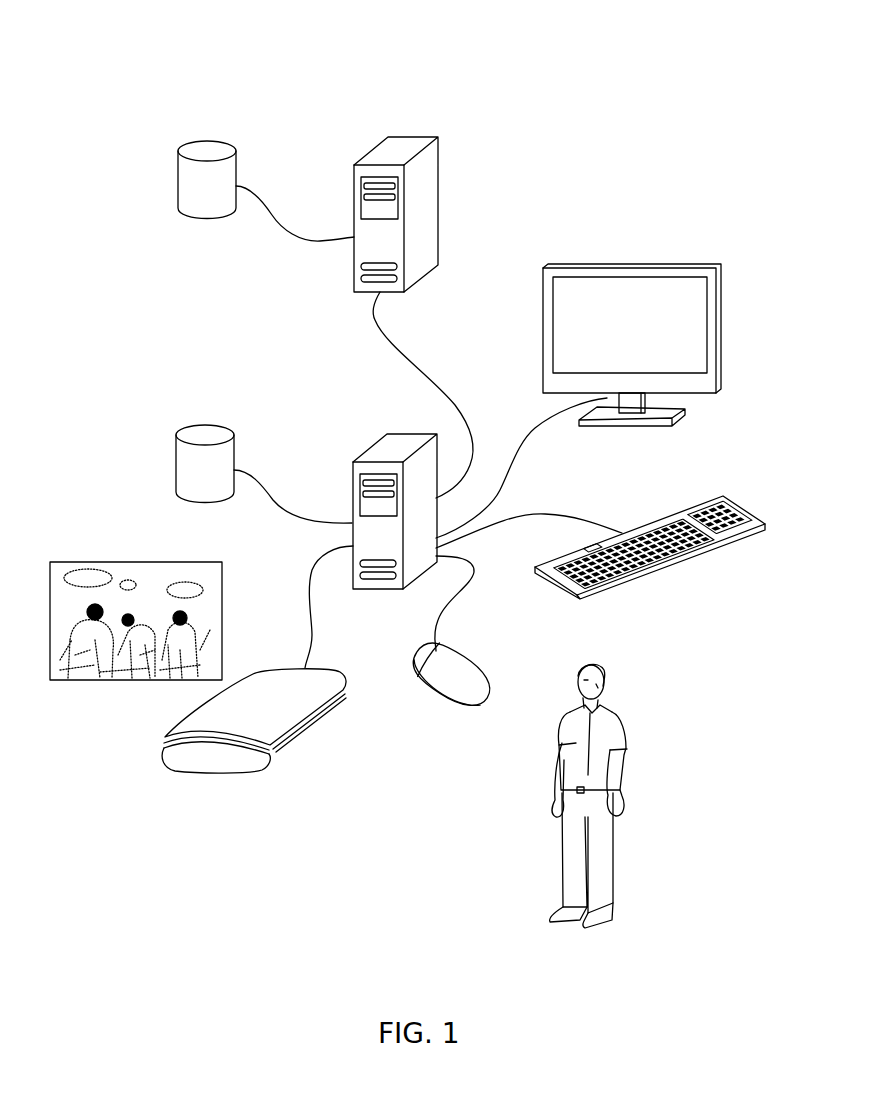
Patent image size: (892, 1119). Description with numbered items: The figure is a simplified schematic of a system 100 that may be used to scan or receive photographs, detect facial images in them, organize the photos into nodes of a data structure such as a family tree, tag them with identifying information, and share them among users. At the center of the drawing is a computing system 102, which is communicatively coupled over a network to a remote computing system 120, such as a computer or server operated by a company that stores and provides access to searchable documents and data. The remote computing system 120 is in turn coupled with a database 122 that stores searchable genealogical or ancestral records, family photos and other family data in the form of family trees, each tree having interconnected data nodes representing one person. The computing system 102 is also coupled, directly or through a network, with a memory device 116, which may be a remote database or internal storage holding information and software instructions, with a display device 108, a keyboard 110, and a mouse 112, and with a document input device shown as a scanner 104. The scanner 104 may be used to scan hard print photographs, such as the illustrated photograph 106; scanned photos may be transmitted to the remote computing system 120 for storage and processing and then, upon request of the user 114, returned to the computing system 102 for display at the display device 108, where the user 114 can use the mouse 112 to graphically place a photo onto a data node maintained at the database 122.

The system 100 is at (86, 76).
The computing system 102 is at (377, 438).
The scanner 104 is at (222, 773).
The photograph 106 is at (100, 562).
The display device 108 is at (663, 265).
The keyboard 110 is at (697, 555).
The mouse 112 is at (437, 695).
The user 114 is at (628, 778).
The memory device 116 is at (200, 424).
The remote computing system 120 is at (439, 185).
The database 122 is at (202, 140).